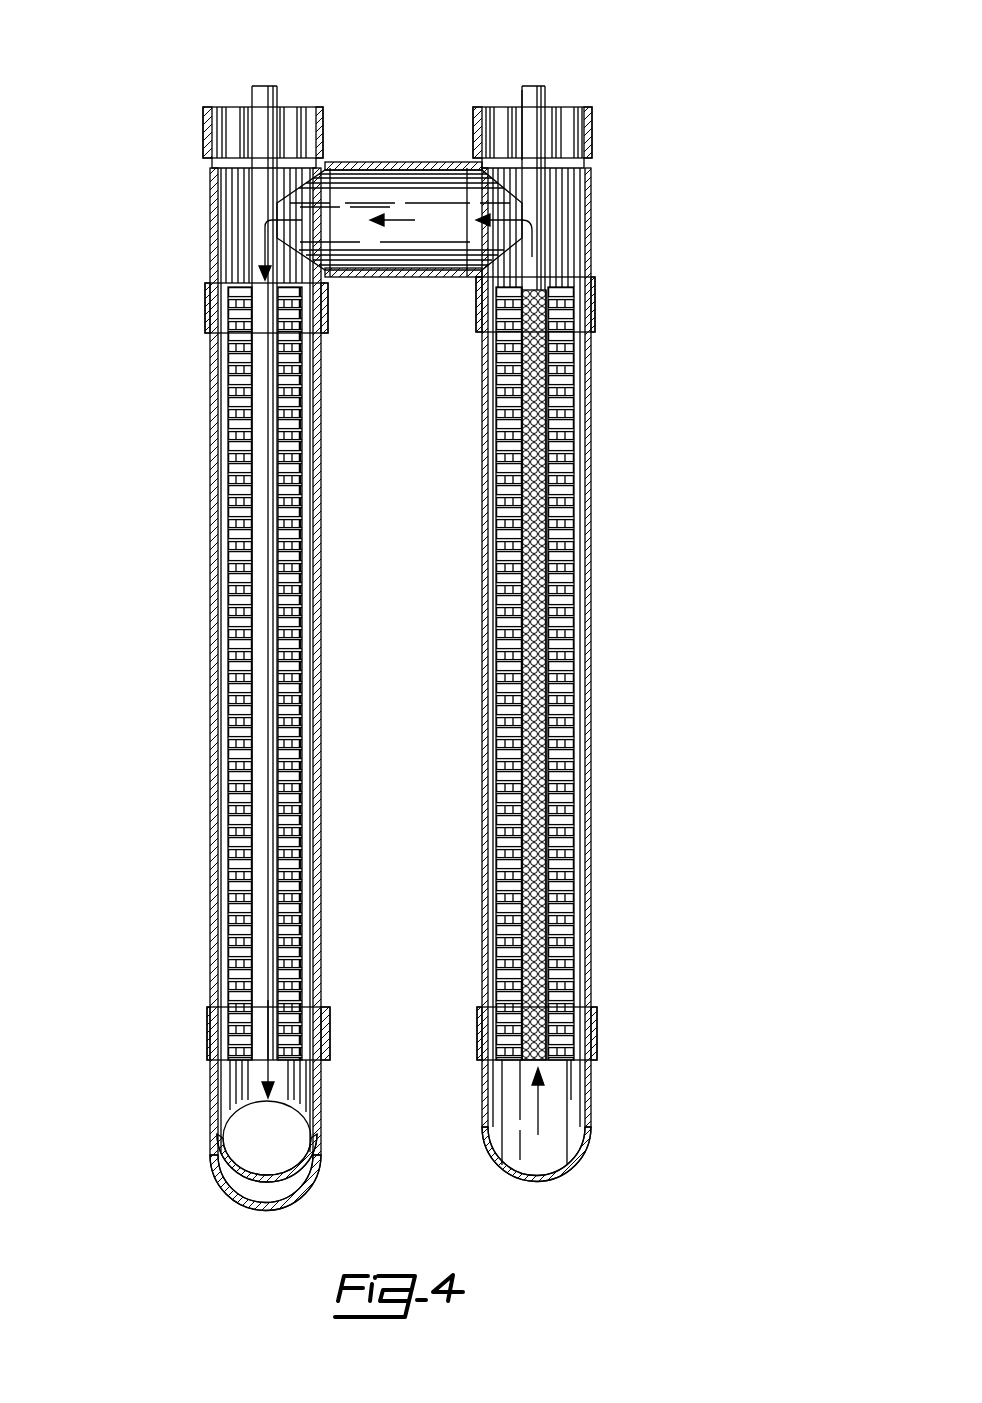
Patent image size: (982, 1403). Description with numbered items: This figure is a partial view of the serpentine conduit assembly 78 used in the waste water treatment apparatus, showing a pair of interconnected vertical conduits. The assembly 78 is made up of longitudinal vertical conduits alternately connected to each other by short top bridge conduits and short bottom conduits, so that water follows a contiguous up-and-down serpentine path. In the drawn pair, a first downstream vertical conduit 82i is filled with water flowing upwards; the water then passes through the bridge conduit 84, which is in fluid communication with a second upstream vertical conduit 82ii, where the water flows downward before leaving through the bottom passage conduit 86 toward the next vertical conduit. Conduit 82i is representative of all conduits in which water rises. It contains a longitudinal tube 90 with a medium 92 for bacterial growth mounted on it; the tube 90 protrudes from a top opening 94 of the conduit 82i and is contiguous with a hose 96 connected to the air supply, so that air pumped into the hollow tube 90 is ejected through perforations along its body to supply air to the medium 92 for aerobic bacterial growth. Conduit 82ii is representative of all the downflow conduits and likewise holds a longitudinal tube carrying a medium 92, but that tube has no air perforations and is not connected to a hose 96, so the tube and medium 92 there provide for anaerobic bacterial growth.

The serpentine conduit assembly 78 is at (680, 78).
The first downstream vertical conduit 82i is at (590, 455).
The second upstream vertical conduit 82ii is at (322, 645).
The bridge conduit 84 is at (398, 162).
The bottom passage conduit 86 is at (248, 1185).
The longitudinal tube 90 is at (546, 98).
The medium for bacterial growth 92 is at (562, 390).
The top opening 94 is at (520, 100).
The hose 96 is at (548, 600).